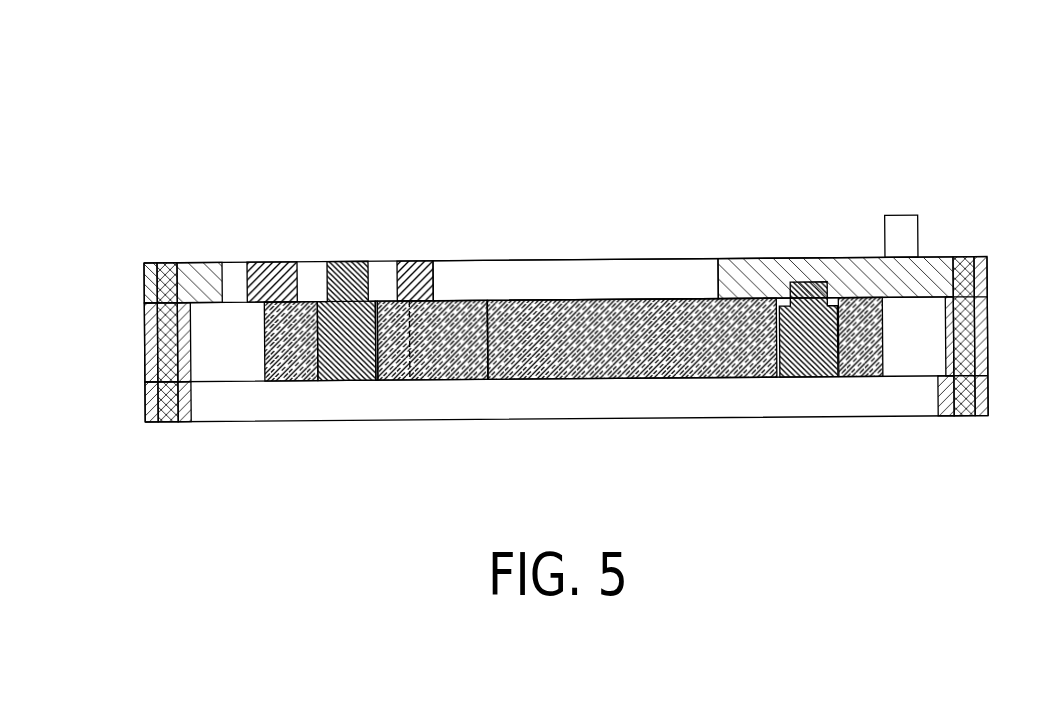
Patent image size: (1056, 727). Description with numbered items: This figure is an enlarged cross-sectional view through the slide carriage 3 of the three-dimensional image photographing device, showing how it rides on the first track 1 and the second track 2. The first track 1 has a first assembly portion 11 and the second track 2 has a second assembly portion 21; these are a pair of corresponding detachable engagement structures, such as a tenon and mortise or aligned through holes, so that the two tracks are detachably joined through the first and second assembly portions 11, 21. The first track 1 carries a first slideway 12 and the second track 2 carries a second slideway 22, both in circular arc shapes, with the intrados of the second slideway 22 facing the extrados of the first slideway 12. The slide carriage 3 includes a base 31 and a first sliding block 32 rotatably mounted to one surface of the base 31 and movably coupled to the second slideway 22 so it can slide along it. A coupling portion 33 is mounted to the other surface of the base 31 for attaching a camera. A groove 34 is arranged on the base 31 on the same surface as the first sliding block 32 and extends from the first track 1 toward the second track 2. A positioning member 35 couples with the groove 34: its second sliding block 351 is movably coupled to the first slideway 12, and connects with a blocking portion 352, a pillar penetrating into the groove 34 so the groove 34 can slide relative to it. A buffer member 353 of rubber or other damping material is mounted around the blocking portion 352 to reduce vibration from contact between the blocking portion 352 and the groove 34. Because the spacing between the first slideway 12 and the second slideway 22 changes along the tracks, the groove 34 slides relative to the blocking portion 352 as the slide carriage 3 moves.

The first track 1 is at (150, 340).
The first assembly portion 11 is at (488, 337).
The first slideway 12 is at (377, 352).
The second track 2 is at (660, 358).
The second assembly portion 21 is at (488, 337).
The second slideway 22 is at (777, 357).
The slide carriage 3 is at (972, 205).
The base 31 is at (752, 268).
The first sliding block 32 is at (812, 358).
The coupling portion 33 is at (898, 222).
The groove 34 is at (572, 272).
The positioning member 35 is at (248, 97).
The second sliding block 351 is at (310, 263).
The blocking portion 352 is at (340, 277).
The buffer member 353 is at (417, 280).